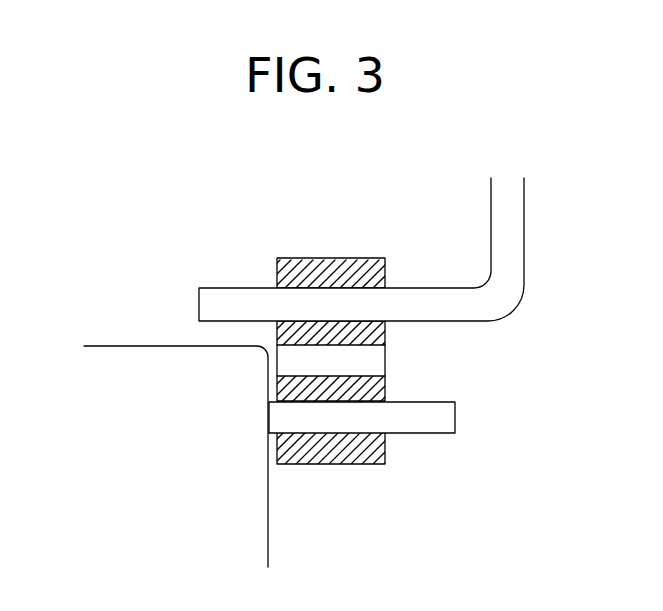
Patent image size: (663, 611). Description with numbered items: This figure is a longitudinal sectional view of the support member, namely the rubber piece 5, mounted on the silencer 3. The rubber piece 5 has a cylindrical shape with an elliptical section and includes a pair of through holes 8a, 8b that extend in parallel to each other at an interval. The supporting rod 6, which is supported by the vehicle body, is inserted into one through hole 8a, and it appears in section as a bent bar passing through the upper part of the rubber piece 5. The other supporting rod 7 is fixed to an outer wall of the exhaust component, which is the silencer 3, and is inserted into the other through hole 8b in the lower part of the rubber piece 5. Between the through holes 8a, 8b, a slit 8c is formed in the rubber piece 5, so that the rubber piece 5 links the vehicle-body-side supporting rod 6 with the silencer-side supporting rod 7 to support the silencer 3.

The silencer 3 is at (127, 357).
The rubber piece 5 is at (341, 247).
The supporting rod 6 is at (510, 222).
The supporting rod 7 is at (440, 418).
The through hole 8a is at (296, 294).
The through hole 8b is at (355, 428).
The slit 8c is at (366, 364).